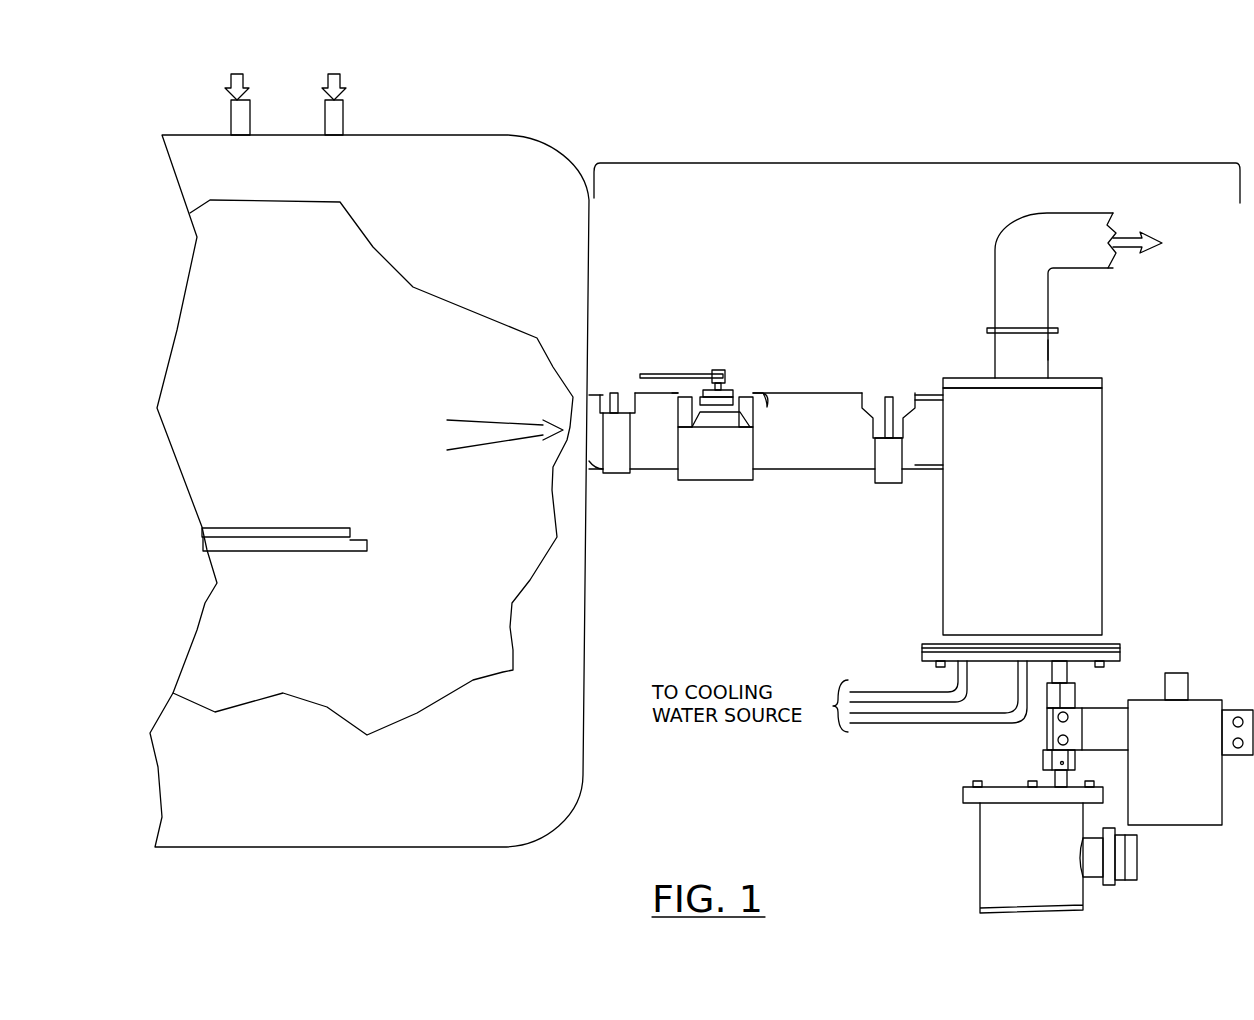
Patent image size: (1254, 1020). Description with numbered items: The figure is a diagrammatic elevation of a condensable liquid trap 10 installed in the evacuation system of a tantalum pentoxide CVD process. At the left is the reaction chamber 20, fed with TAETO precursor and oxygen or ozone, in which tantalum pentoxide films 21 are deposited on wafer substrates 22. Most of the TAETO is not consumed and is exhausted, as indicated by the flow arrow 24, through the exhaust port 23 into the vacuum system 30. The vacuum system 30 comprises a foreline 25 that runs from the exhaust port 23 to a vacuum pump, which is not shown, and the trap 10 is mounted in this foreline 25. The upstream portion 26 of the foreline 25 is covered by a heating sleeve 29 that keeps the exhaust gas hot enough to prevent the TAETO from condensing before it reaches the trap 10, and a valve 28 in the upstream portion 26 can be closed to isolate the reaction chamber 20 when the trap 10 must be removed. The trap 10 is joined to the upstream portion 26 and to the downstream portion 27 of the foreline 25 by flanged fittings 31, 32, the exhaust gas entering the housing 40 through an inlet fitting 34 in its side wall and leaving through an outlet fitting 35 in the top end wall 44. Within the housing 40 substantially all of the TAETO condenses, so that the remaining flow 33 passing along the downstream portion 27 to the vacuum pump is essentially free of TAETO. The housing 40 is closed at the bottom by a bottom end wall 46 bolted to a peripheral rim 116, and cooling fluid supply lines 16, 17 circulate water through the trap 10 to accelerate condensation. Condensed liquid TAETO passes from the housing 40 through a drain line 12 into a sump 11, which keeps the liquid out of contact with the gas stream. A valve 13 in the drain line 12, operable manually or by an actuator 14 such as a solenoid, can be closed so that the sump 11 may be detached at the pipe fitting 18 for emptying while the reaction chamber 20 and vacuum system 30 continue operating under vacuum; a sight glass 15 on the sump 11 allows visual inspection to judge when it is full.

The trap 10 is at (1134, 378).
The sump 11 is at (980, 838).
The drain line 12 is at (1067, 675).
The valve 13 is at (1047, 727).
The actuator 14 is at (1200, 700).
The sight glass 15 is at (1137, 860).
The cooling fluid supply line 16 is at (887, 690).
The cooling fluid supply line 17 is at (885, 727).
The pipe fitting 18 is at (1043, 757).
The reaction chamber 20 is at (298, 405).
The tantalum pentoxide film 21 is at (328, 528).
The wafer substrate 22 is at (350, 533).
The exhaust port 23 is at (597, 387).
The flow arrow 24 is at (488, 428).
The foreline 25 is at (992, 236).
The upstream portion of foreline 26 is at (770, 393).
The downstream portion of foreline 27 is at (995, 266).
The valve 28 is at (745, 393).
The heating sleeve 29 is at (862, 400).
The vacuum system 30 is at (926, 163).
The flanged fitting 31 is at (905, 400).
The flanged fitting 32 is at (990, 328).
The remaining flow 33 is at (1123, 233).
The inlet fitting 34 is at (925, 393).
The outlet fitting 35 is at (1050, 350).
The housing 40 is at (1102, 500).
The top end wall 44 is at (975, 378).
The bottom end wall 46 is at (922, 655).
The peripheral rim 116 is at (922, 645).